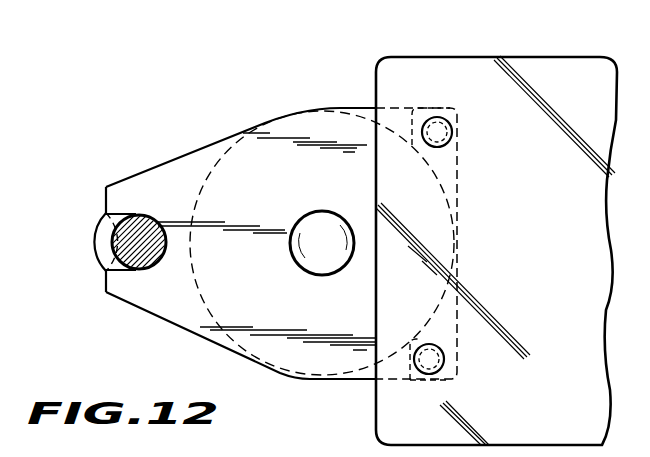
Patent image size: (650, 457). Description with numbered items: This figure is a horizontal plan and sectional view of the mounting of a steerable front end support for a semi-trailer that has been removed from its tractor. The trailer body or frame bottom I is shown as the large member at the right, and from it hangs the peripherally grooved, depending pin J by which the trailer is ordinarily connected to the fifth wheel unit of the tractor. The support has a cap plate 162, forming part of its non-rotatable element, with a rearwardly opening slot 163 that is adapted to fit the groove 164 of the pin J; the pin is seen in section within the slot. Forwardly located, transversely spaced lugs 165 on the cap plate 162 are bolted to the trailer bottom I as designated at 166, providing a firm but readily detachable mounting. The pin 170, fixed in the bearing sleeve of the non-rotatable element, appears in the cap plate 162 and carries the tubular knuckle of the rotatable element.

The body or frame bottom I is at (553, 58).
The depending pin J is at (98, 242).
The cap plate 162 is at (238, 158).
The rearwardly opening slot 163 is at (113, 212).
The groove 164 is at (111, 255).
The lugs 165 is at (433, 108).
The bolts 166 is at (449, 132).
The pin 170 is at (324, 222).